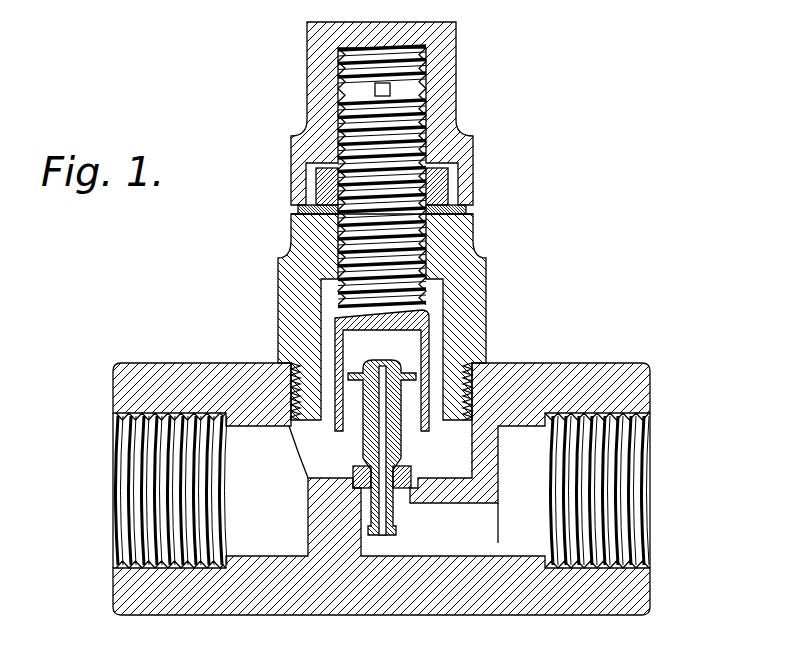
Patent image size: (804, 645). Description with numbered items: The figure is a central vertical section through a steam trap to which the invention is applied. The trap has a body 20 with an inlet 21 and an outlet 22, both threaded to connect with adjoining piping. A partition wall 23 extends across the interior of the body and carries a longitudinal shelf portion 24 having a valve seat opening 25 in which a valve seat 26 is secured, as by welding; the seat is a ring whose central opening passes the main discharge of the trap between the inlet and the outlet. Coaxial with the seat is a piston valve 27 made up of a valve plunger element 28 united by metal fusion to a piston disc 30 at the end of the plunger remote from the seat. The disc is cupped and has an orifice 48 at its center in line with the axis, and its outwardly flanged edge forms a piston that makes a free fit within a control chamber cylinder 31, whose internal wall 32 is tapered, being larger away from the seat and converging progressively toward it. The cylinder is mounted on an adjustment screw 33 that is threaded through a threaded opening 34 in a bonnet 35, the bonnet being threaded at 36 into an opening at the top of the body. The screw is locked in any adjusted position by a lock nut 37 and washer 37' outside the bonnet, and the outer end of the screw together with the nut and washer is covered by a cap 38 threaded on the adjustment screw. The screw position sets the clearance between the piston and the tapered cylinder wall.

The body 20 is at (575, 372).
The inlet 21 is at (115, 486).
The outlet 22 is at (618, 488).
The partition wall 23 is at (463, 484).
The shelf portion 24 is at (428, 478).
The valve seat opening 25 is at (388, 490).
The valve seat 26 is at (347, 464).
The piston valve 27 is at (392, 390).
The valve plunger element 28 is at (391, 448).
The piston disc 30 is at (393, 362).
The control chamber cylinder 31 is at (418, 340).
The internal wall 32 is at (332, 346).
The adjustment screw 33 is at (412, 240).
The threaded opening 34 is at (330, 211).
The bonnet 35 is at (272, 258).
The bonnet threads 36 is at (283, 383).
The lock nut 37 is at (414, 180).
The washer 37' is at (409, 199).
The cap 38 is at (437, 68).
The orifice 48 is at (372, 357).